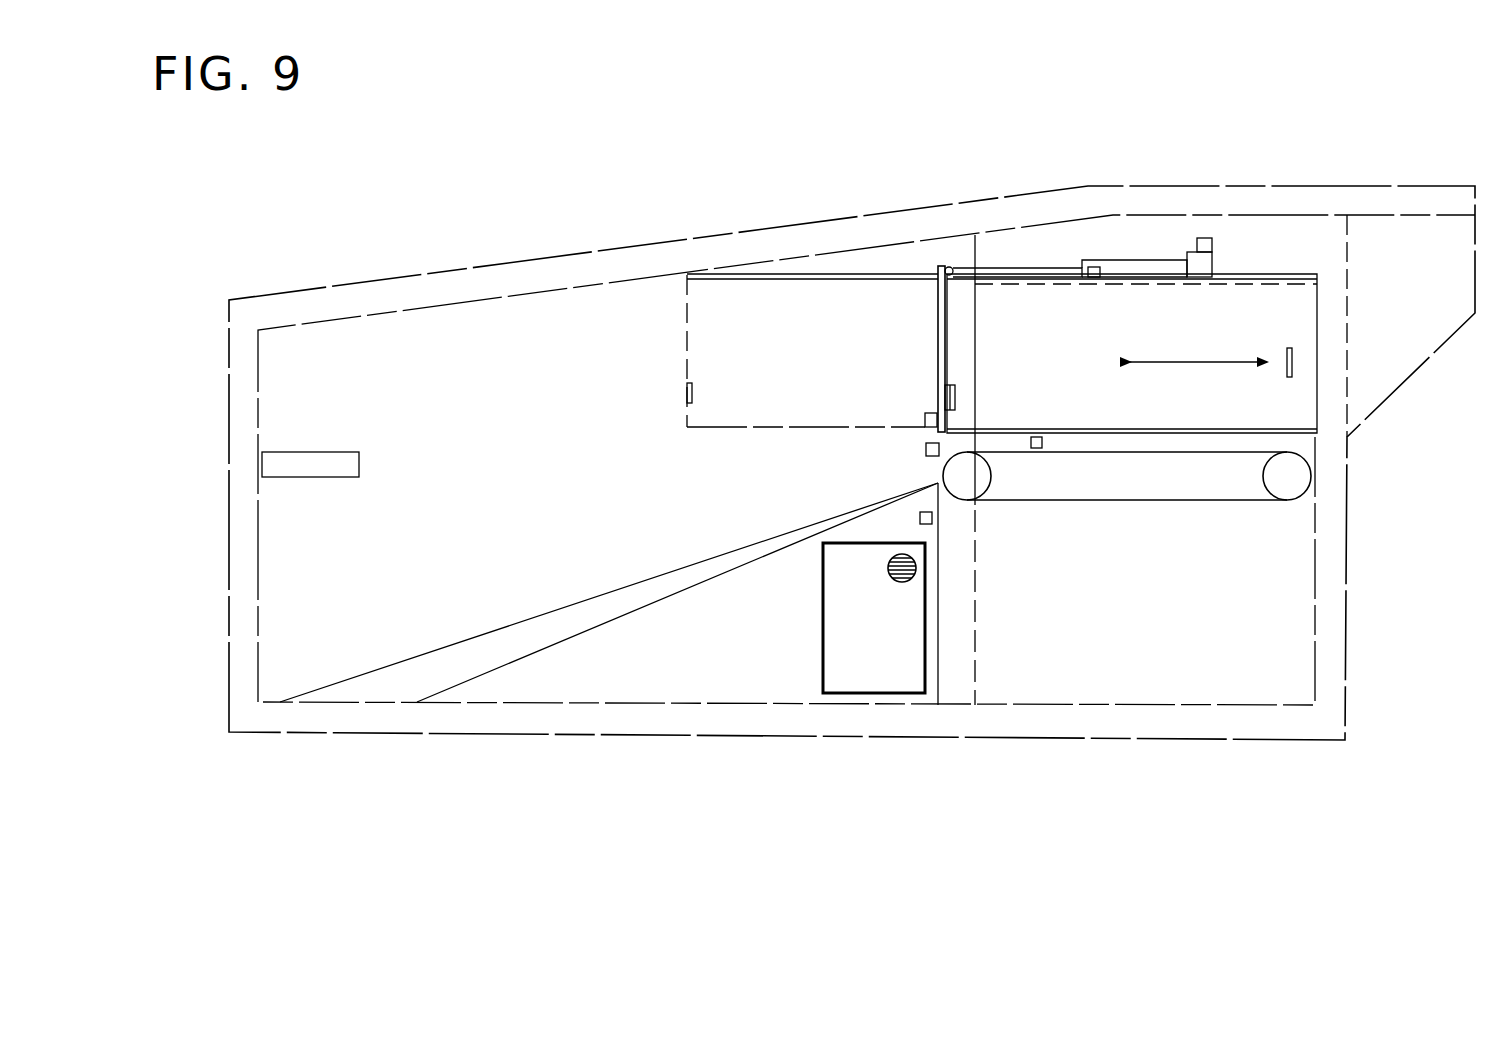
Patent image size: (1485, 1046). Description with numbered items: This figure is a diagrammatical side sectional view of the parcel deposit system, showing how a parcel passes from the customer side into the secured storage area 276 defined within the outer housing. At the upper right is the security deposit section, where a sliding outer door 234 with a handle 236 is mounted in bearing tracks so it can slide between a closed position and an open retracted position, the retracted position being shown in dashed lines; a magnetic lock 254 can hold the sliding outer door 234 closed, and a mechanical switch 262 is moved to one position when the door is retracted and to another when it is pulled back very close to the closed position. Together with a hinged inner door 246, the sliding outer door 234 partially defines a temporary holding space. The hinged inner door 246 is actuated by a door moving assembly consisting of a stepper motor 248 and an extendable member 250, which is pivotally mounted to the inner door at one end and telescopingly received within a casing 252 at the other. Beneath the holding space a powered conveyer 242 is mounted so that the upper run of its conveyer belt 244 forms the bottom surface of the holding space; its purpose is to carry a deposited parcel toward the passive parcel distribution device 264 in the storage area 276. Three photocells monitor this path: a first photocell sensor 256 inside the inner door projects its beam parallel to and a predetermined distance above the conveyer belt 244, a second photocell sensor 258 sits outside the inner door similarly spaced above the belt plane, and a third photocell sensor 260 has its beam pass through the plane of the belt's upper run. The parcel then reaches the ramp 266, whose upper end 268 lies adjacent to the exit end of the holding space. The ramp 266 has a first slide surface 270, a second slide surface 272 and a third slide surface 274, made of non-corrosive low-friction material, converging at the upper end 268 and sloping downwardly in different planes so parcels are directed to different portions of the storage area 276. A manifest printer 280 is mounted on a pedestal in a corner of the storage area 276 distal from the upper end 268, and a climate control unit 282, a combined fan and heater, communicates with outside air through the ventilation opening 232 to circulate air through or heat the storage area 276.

The ventilation opening 232 is at (917, 568).
The sliding outer door 234 is at (1230, 418).
The handle 236 is at (1294, 372).
The powered conveyer 242 is at (1055, 512).
The conveyer belt 244 is at (1162, 503).
The hinged inner door 246 is at (937, 360).
The stepper motor 248 is at (1212, 246).
The extendable member 250 is at (1030, 268).
The casing 252 is at (1150, 270).
The magnetic lock 254 is at (956, 396).
The first photocell sensor 256 is at (1036, 437).
The second photocell sensor 258 is at (926, 450).
The third photocell sensor 260 is at (925, 416).
The mechanical switch 262 is at (1094, 278).
The passive parcel distribution device 264 is at (596, 587).
The ramp 266 is at (720, 553).
The upper end 268 is at (934, 483).
The first slide surface 270 is at (680, 566).
The second slide surface 272 is at (498, 640).
The third slide surface 274 is at (662, 673).
The storage area 276 is at (410, 355).
The manifest printer 280 is at (351, 478).
The climate control unit 282 is at (828, 613).